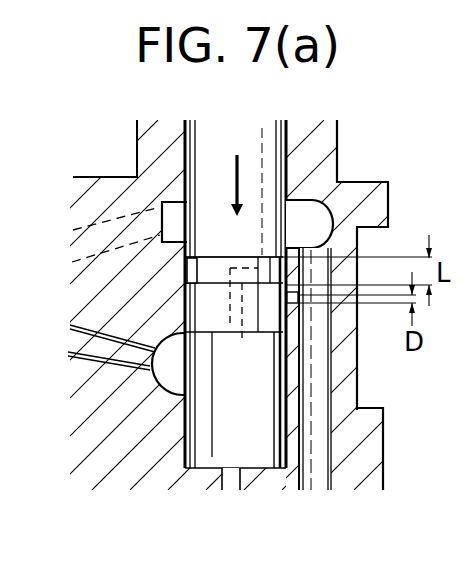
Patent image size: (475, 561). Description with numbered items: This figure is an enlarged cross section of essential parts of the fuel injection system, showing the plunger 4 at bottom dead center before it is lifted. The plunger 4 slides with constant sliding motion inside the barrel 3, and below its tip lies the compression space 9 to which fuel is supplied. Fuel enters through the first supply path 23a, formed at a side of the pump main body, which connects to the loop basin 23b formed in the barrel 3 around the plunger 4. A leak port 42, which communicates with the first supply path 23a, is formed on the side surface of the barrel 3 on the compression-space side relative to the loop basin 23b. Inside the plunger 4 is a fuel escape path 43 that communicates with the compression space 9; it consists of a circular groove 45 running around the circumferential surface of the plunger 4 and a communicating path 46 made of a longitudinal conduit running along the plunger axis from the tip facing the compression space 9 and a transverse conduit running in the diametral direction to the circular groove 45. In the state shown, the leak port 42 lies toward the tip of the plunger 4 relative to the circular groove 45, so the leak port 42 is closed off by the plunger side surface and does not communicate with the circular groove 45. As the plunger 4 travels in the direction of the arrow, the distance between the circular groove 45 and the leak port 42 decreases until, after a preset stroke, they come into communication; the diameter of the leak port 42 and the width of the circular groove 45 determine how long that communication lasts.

The barrel 3 is at (281, 395).
The plunger 4 is at (262, 128).
The compression space 9 is at (212, 457).
The first supply path 23a is at (329, 433).
The loop basin 23b is at (315, 217).
The leak port 42 is at (300, 310).
The fuel escape path 43 is at (181, 270).
The circular groove 45 is at (282, 257).
The communicating path 46 is at (230, 327).